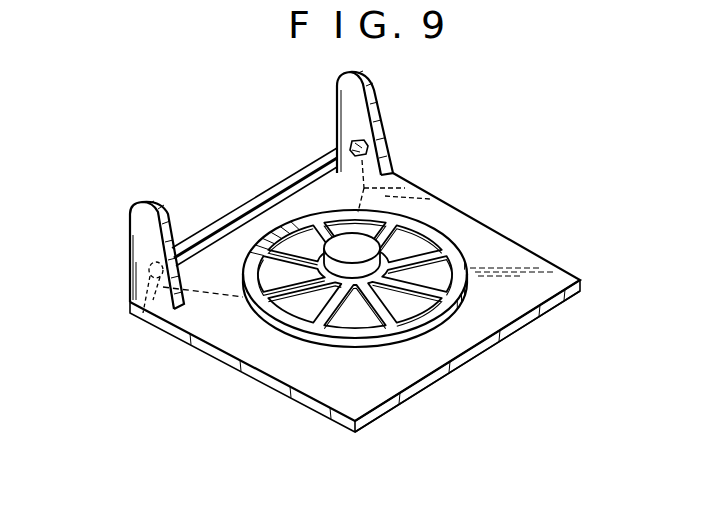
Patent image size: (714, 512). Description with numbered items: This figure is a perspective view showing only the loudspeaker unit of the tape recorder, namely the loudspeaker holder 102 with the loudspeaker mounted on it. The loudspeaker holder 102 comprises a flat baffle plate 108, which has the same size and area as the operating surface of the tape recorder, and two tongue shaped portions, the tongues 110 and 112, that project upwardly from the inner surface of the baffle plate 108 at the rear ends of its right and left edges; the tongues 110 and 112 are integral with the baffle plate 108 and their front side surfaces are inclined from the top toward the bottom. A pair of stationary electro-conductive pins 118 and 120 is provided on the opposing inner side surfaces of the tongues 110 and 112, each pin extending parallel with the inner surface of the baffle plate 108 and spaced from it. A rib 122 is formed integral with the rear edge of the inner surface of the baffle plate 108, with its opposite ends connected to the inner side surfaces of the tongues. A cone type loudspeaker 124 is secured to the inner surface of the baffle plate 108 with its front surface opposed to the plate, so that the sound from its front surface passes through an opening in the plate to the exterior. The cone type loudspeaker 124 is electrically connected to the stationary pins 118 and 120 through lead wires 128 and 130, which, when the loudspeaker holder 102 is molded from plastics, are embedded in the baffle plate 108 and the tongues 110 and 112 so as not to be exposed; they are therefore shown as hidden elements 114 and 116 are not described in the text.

The loudspeaker holder 102 is at (472, 210).
The baffle plate 108 is at (530, 292).
The tongue 110 is at (135, 268).
The tongue 112 is at (370, 141).
The edge of left post 114 is at (163, 223).
The edge of right post 116 is at (384, 124).
The stationary electro-conductive pin 118 is at (152, 305).
The stationary electro-conductive pin 120 is at (352, 144).
The rib 122 is at (275, 188).
The cone type loudspeaker 124 is at (438, 338).
The lead wire 128 is at (228, 309).
The lead wire 130 is at (412, 187).